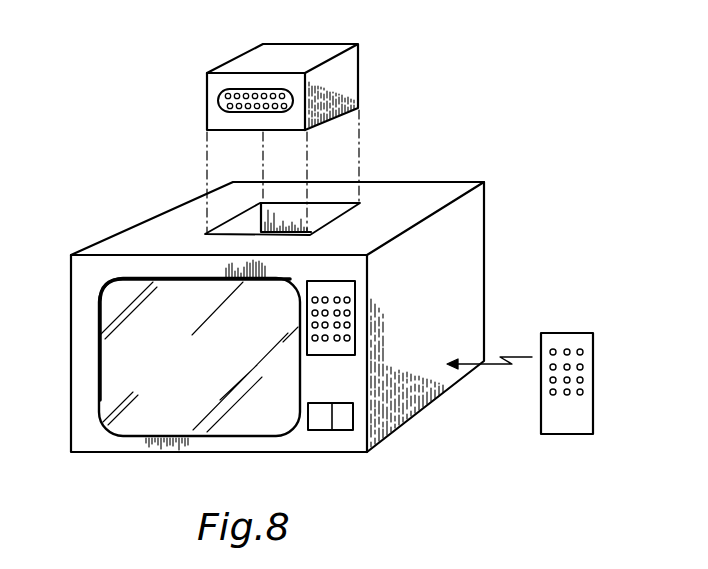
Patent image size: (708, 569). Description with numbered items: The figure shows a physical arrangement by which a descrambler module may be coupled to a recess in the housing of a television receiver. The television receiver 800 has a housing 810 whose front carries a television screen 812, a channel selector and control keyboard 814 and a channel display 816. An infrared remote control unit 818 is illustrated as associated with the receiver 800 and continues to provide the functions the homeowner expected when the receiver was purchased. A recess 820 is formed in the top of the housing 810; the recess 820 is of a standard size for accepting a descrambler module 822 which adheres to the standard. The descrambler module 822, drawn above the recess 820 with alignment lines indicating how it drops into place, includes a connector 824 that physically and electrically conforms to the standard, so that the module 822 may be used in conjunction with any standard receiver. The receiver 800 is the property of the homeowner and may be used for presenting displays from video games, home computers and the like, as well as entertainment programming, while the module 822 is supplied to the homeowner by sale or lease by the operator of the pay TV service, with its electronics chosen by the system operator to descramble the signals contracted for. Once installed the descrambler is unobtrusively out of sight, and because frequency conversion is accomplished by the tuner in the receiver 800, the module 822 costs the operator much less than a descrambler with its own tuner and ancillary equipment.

The television receiver 800 is at (490, 432).
The housing 810 is at (70, 412).
The television screen 812 is at (113, 351).
The channel selector and control keyboard 814 is at (358, 358).
The channel display 816 is at (323, 430).
The infrared remote control unit 818 is at (593, 397).
The recess 820 is at (333, 212).
The descrambler module 822 is at (353, 83).
The connector 824 is at (220, 98).